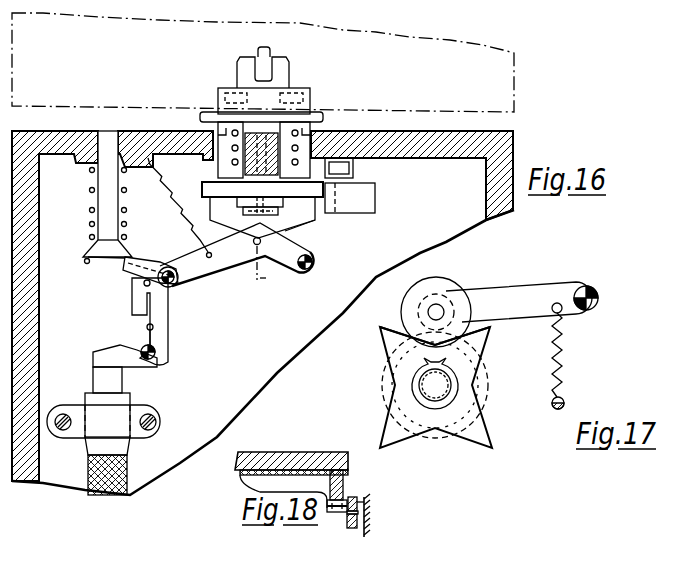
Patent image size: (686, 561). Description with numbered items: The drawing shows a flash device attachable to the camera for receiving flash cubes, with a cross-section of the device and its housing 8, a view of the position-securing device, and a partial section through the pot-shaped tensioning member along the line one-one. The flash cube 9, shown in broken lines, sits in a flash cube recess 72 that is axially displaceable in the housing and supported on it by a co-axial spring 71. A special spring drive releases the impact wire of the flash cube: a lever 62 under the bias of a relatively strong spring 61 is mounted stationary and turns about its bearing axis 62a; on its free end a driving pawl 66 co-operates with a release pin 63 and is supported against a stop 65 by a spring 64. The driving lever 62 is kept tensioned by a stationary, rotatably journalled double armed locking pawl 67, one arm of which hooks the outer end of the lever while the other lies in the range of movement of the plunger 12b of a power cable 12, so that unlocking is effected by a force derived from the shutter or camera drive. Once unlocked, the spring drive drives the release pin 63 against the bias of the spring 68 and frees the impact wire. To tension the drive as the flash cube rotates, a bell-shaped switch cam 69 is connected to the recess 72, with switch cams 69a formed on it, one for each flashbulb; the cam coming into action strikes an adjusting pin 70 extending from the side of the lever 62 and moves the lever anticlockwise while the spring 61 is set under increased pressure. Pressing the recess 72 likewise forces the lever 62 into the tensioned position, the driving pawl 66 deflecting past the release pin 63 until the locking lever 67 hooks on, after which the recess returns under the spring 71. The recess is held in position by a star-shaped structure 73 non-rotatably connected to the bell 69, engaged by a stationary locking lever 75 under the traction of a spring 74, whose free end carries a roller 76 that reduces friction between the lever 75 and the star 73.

In FIG. 16, the housing 8 is at (500, 152).
In FIG. 16, the flash cube 9 is at (501, 73).
In FIG. 16, the power cable 12 is at (88, 468).
In FIG. 16, the plunger 12b is at (103, 377).
In FIG. 16, the spring 61 is at (173, 209).
In FIG. 16, the lever 62 is at (207, 264).
In FIG. 18, the lever 62 is at (357, 502).
In FIG. 16, the bearing axis 62a is at (307, 269).
In FIG. 16, the release pin 63 is at (105, 176).
In FIG. 16, the spring 64 is at (165, 269).
In FIG. 16, the stop 65 is at (146, 286).
In FIG. 16, the driving pawl 66 is at (137, 267).
In FIG. 16, the double armed locking pawl 67 is at (160, 349).
In FIG. 16, the spring 68 is at (90, 226).
In FIG. 16, the bell-shaped switch cam 69 is at (300, 222).
In FIG. 17, the bell-shaped switch cam 69 is at (480, 375).
In FIG. 18, the bell-shaped switch cam 69 is at (340, 452).
In FIG. 16, the switch cams 69a is at (290, 237).
In FIG. 18, the switch cams 69a is at (342, 513).
In FIG. 16, the adjusting pin 70 is at (256, 245).
In FIG. 18, the adjusting pin 70 is at (335, 501).
In FIG. 16, the co-axial spring 71 is at (290, 150).
In FIG. 16, the flash cube recess 72 is at (307, 95).
In FIG. 17, the star-shaped structure 73 is at (478, 430).
In FIG. 18, the star-shaped structure 73 is at (295, 450).
In FIG. 17, the spring 74 is at (563, 355).
In FIG. 17, the locking lever 75 is at (519, 296).
In FIG. 17, the roller 76 is at (443, 282).